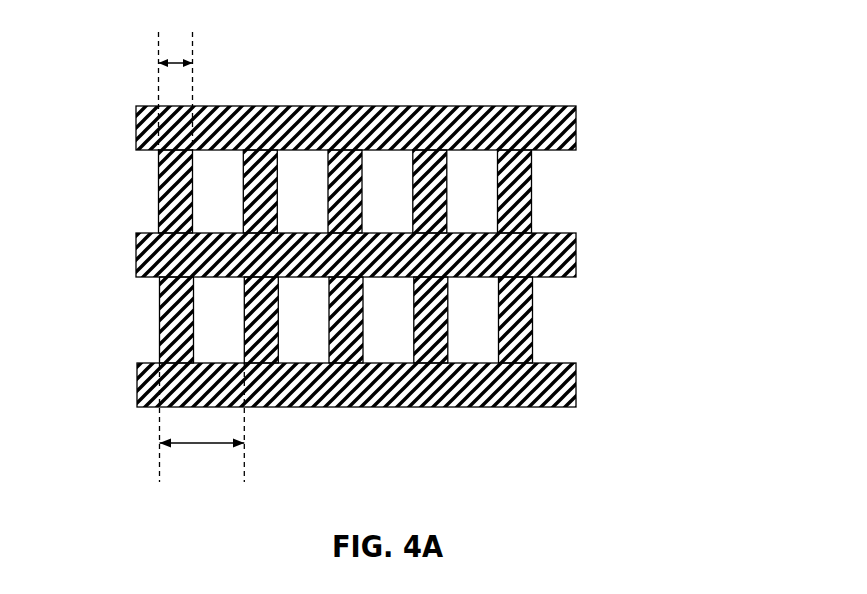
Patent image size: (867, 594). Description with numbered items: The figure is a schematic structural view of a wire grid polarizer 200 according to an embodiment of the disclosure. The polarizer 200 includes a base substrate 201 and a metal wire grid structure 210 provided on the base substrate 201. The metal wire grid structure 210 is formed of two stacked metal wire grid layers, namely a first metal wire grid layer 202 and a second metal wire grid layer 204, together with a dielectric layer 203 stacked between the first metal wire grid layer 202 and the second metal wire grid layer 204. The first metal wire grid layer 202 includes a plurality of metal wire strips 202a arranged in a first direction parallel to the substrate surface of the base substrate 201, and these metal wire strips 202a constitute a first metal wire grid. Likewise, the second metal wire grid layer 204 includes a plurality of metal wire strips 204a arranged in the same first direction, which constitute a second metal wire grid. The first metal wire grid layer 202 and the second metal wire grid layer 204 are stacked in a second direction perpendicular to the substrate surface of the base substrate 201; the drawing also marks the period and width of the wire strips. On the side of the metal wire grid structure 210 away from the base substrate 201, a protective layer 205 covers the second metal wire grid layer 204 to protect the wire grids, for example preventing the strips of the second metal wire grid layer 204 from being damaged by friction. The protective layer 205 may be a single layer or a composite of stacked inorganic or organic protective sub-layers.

The wire grid polarizer 200 is at (447, 80).
The base substrate 201 is at (589, 386).
The first metal wire grid layer 202 is at (362, 320).
The metal wire strips 202a is at (160, 325).
The dielectric layer 203 is at (589, 254).
The second metal wire grid layer 204 is at (362, 191).
The metal wire strips 204a is at (158, 183).
The protective layer 205 is at (589, 125).
The metal wire grid structure 210 is at (411, 256).